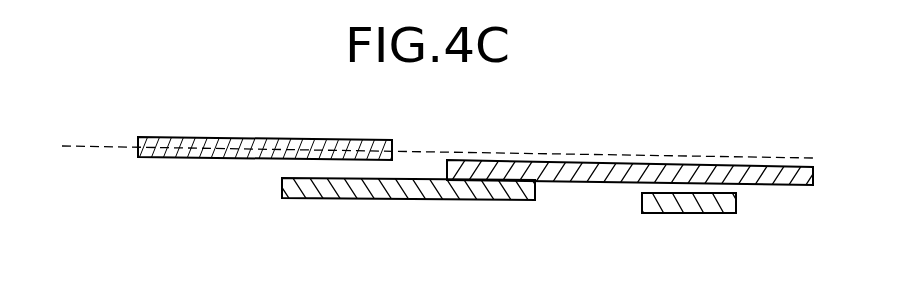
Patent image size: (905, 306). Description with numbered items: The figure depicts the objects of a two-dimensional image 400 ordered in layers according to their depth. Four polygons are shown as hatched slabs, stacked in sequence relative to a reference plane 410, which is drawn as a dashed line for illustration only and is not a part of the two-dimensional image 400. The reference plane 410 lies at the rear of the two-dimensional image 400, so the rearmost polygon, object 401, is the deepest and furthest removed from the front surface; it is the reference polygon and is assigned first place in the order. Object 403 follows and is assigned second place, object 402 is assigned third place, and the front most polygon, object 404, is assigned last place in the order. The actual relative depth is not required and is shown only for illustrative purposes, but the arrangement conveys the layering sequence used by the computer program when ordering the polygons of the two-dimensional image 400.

The two-dimensional image 400 is at (157, 211).
The object 401 is at (227, 137).
The object 402 is at (373, 200).
The object 403 is at (775, 186).
The object 404 is at (673, 213).
The reference plane 410 is at (567, 150).